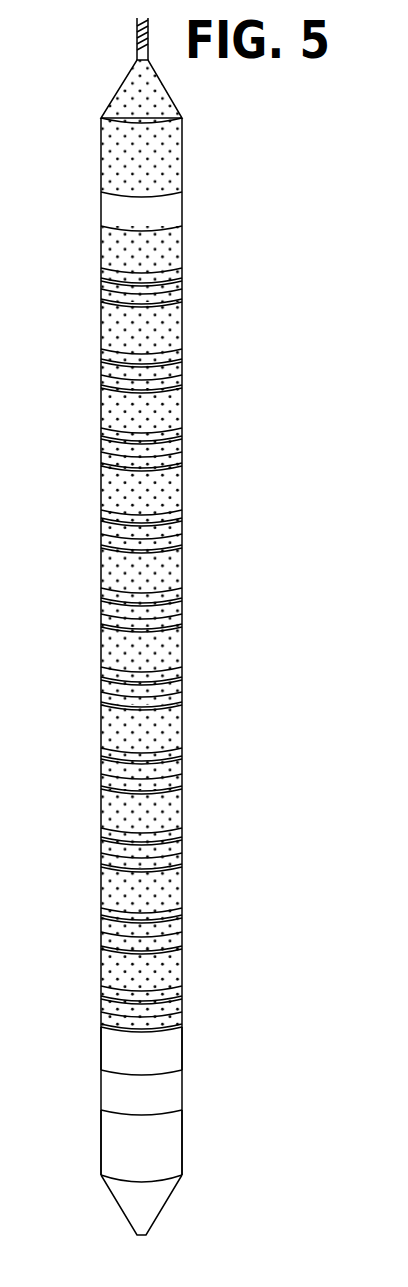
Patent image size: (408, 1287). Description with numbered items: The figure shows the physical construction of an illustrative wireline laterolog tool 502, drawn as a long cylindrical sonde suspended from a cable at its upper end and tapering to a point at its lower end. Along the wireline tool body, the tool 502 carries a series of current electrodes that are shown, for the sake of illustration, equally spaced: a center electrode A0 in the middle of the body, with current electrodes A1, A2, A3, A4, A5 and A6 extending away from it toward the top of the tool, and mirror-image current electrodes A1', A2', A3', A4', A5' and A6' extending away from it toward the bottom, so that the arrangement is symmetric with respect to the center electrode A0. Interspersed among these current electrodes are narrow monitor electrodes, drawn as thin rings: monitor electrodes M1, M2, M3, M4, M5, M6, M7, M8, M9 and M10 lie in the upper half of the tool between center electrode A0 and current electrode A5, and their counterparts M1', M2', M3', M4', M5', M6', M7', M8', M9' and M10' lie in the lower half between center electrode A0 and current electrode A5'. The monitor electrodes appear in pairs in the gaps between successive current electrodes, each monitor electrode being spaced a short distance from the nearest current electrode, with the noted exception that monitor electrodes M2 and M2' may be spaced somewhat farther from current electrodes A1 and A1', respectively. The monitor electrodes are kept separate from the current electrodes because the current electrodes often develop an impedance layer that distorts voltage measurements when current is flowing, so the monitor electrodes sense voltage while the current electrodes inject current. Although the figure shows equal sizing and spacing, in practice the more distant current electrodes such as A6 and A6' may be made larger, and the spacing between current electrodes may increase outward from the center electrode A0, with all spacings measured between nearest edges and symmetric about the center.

The wireline laterolog tool 502 is at (105, 112).
The current electrode A6 is at (159, 155).
The current electrode A5 is at (160, 247).
The current electrode A4 is at (160, 325).
The current electrode A3 is at (160, 408).
The current electrode A2 is at (160, 488).
The current electrode A1 is at (160, 568).
The center electrode A0 is at (181, 648).
The current electrode A1' is at (162, 726).
The current electrode A2' is at (162, 808).
The current electrode A3' is at (162, 887).
The current electrode A4' is at (162, 967).
The current electrode A5' is at (161, 1051).
The current electrode A6' is at (161, 1142).
The monitor electrode M10 is at (114, 276).
The monitor electrode M9 is at (117, 302).
The monitor electrode M8 is at (117, 354).
The monitor electrode M7 is at (117, 381).
The monitor electrode M6 is at (117, 432).
The monitor electrode M5 is at (117, 463).
The monitor electrode M4 is at (117, 512).
The monitor electrode M3 is at (117, 540).
The monitor electrode M2 is at (117, 594).
The monitor electrode M1 is at (117, 621).
The monitor electrode M1' is at (117, 674).
The monitor electrode M2' is at (117, 703).
The monitor electrode M3' is at (117, 755).
The monitor electrode M4' is at (117, 783).
The monitor electrode M5' is at (117, 835).
The monitor electrode M6' is at (117, 861).
The monitor electrode M7' is at (117, 914).
The monitor electrode M8' is at (117, 943).
The monitor electrode M9' is at (117, 993).
The monitor electrode M10' is at (114, 1022).